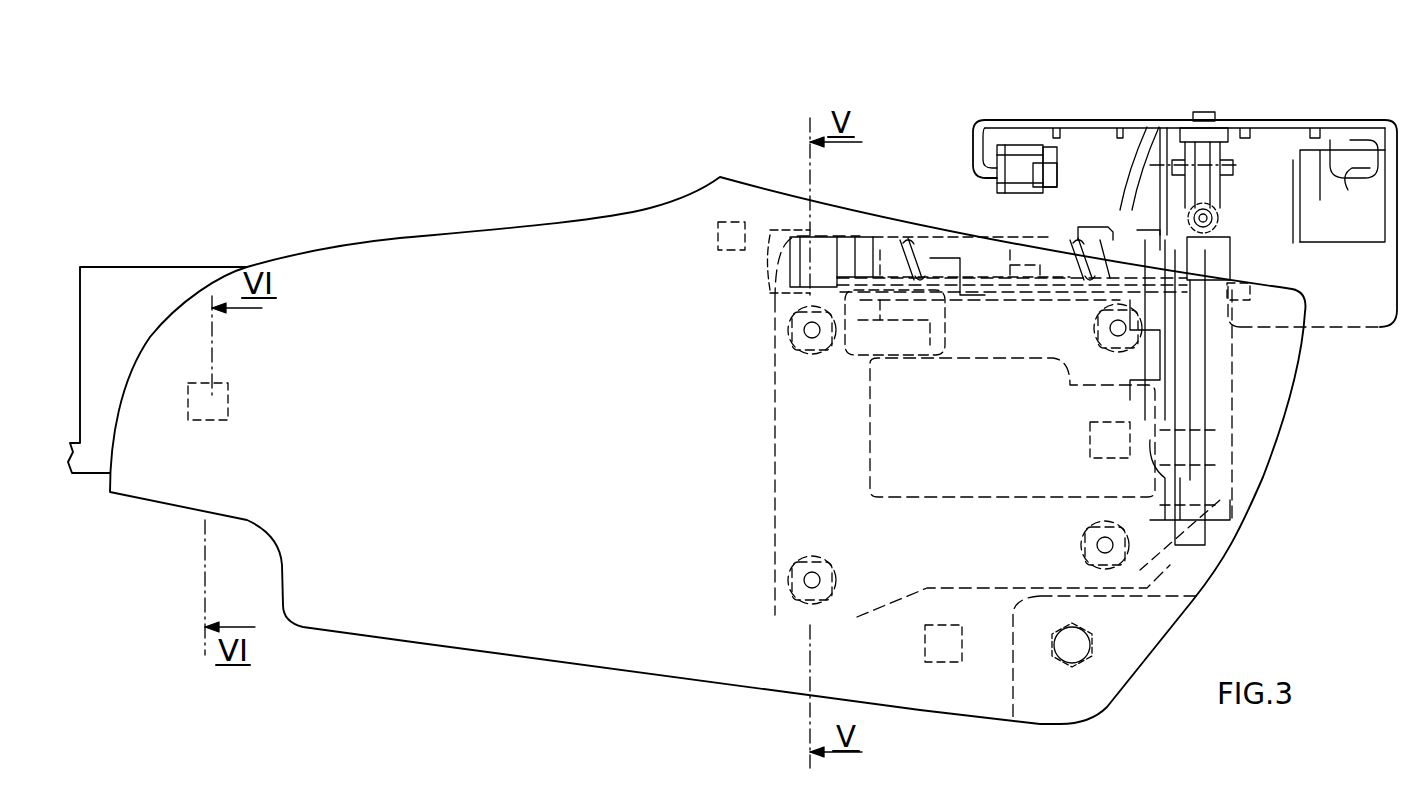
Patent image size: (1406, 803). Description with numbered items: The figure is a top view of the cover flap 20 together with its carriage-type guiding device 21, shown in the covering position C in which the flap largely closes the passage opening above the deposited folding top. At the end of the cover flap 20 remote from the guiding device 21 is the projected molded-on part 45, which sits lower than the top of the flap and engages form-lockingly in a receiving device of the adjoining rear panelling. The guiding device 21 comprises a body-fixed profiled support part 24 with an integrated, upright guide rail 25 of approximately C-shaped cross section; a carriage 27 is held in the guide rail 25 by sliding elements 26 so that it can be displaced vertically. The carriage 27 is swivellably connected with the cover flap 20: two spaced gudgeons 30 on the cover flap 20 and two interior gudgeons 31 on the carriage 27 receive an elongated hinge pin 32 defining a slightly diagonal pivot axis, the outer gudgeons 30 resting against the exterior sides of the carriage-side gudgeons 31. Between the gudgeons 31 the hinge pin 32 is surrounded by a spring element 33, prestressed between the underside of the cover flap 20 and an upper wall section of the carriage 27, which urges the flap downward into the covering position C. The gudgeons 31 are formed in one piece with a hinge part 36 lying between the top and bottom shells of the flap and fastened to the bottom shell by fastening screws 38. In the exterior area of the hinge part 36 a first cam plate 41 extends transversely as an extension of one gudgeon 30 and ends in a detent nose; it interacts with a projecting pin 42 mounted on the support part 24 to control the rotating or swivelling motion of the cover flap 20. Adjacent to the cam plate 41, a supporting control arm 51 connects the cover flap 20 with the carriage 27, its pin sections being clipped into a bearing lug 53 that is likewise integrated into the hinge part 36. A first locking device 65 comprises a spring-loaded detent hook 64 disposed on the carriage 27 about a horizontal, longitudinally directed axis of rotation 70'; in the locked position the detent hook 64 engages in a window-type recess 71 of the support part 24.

The cover flap 20 is at (496, 226).
The carriage-type guiding device 21 is at (1366, 110).
The profiled support part 24 is at (1108, 122).
The guide rail 25 is at (1020, 142).
The sliding elements 26 is at (1047, 150).
The carriage 27 is at (1292, 150).
The gudgeons 30 is at (800, 232).
The gudgeons 31 is at (860, 242).
The hinge pin 32 is at (965, 265).
The spring element 33 is at (914, 244).
The hinge part 36 is at (772, 512).
The fastening screws 38 is at (805, 330).
The first cam plate 41 is at (1240, 400).
The projecting pin 42 is at (1293, 295).
The molded-on part 45 is at (118, 298).
The supporting control arm 51 is at (1210, 458).
The bearing lug 53 is at (1208, 523).
The detent hook 64 is at (1205, 110).
The first locking device 65 is at (1224, 126).
The axis of rotation 70' is at (1221, 198).
The window-type recess 71 is at (1183, 125).
The covering position C is at (398, 234).